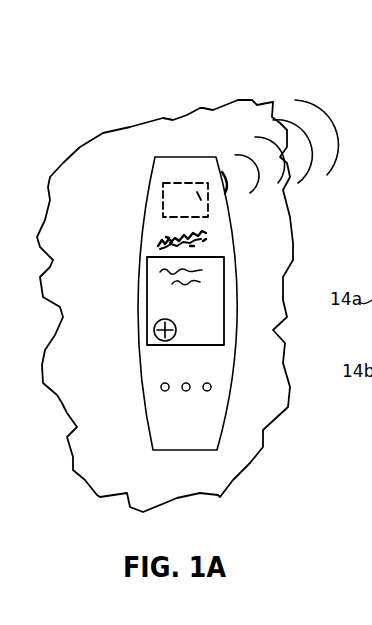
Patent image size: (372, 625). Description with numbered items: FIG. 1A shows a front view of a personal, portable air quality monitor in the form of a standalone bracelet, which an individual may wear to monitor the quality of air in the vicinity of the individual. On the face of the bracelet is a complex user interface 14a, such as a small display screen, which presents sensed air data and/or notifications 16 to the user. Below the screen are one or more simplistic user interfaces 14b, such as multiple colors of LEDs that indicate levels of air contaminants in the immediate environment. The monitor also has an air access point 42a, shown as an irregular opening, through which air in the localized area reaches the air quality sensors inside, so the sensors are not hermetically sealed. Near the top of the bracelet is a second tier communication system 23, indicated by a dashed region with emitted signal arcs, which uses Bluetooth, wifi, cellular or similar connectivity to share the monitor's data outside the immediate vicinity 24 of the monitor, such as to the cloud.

The immediate vicinity 24 is at (241, 98).
The second tier communication system 23 is at (175, 205).
The air access point 42a is at (208, 232).
The complex user interface 14a is at (155, 307).
The notifications 16 is at (202, 270).
The simplistic user interface 14b is at (162, 390).